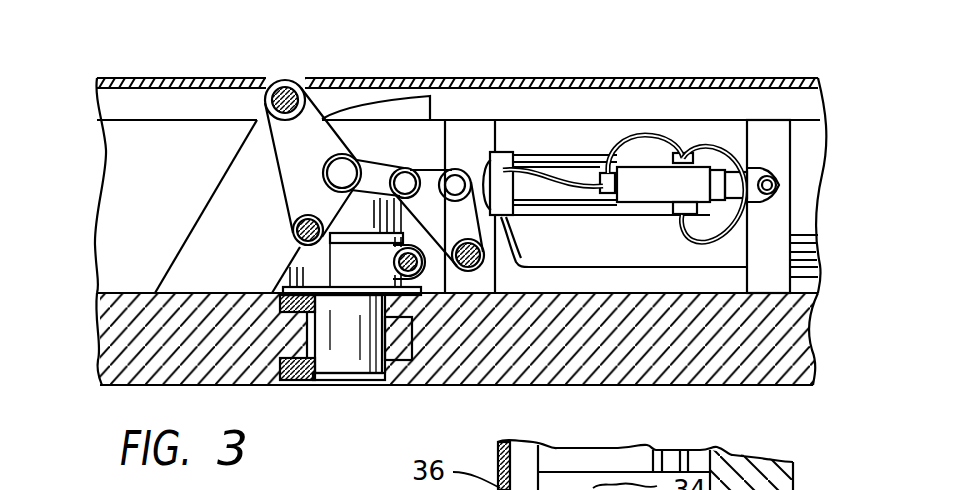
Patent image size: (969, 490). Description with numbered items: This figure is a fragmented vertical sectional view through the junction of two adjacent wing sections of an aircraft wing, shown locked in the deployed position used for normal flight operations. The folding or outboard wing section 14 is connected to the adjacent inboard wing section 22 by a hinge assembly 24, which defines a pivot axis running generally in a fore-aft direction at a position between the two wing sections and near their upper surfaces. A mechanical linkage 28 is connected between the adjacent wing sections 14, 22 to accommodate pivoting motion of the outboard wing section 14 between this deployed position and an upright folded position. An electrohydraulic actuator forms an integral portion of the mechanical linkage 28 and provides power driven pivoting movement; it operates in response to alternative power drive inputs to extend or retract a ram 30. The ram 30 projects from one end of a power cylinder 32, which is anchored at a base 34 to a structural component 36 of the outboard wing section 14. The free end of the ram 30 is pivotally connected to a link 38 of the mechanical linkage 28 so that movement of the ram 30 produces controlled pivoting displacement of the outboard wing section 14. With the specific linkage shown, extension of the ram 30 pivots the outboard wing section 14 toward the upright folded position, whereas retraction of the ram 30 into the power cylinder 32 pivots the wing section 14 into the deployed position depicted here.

The outboard wing section 14 is at (828, 323).
The inboard wing section 22 is at (127, 353).
The hinge assembly 24 is at (286, 80).
The mechanical linkage 28 is at (361, 141).
The ram 30 is at (467, 152).
The power cylinder 32 is at (563, 168).
The base 34 is at (773, 170).
The structural component 36 is at (773, 209).
The link 38 is at (502, 217).